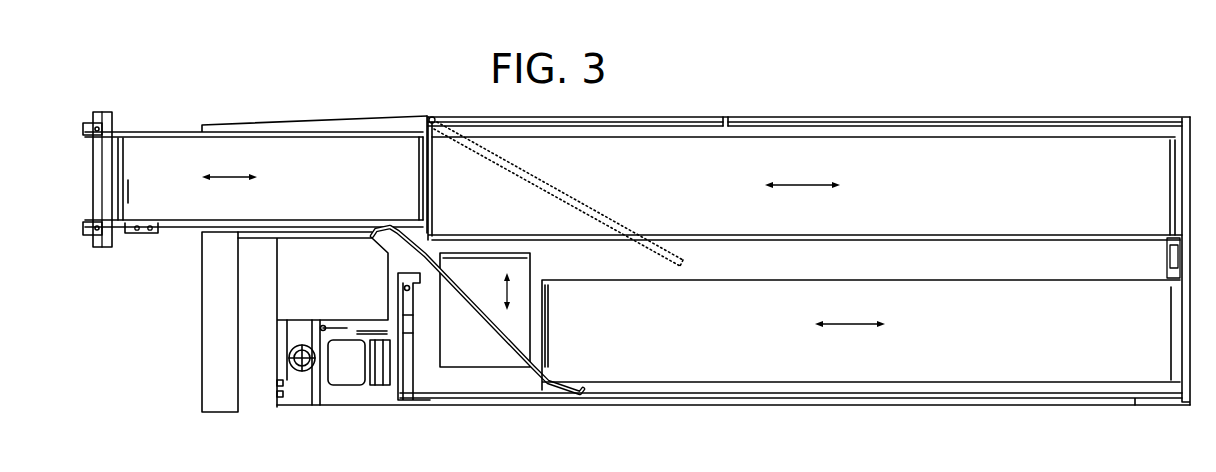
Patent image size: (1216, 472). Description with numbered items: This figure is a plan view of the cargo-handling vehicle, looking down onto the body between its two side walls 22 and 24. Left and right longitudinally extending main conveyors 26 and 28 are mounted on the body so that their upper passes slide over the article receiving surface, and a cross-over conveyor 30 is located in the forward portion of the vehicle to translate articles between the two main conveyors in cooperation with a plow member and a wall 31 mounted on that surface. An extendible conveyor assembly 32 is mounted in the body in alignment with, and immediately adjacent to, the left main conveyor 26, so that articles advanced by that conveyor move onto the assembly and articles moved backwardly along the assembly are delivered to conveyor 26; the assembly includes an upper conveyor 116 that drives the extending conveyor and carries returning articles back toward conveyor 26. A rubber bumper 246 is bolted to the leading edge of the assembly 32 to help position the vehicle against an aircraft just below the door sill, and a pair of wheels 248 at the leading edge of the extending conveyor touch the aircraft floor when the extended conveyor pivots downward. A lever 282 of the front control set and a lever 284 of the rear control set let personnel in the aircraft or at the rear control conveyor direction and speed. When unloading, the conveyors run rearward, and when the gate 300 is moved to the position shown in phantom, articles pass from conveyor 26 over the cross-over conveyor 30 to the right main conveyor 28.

The side wall 22 is at (862, 117).
The side wall 24 is at (792, 404).
The left main conveyor 26 is at (1112, 147).
The right main conveyor 28 is at (883, 374).
The cross-over conveyor 30 is at (522, 275).
The wall 31 is at (498, 333).
The extendible conveyor assembly 32 is at (178, 126).
The upper conveyor 116 is at (319, 156).
The rubber bumper 246 is at (100, 248).
The wheels 248 is at (89, 124).
The lever 282 is at (153, 234).
The lever 284 is at (138, 226).
The gate 300 is at (694, 117).